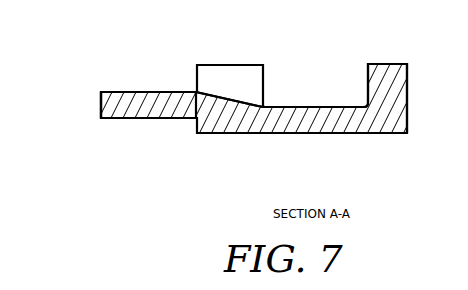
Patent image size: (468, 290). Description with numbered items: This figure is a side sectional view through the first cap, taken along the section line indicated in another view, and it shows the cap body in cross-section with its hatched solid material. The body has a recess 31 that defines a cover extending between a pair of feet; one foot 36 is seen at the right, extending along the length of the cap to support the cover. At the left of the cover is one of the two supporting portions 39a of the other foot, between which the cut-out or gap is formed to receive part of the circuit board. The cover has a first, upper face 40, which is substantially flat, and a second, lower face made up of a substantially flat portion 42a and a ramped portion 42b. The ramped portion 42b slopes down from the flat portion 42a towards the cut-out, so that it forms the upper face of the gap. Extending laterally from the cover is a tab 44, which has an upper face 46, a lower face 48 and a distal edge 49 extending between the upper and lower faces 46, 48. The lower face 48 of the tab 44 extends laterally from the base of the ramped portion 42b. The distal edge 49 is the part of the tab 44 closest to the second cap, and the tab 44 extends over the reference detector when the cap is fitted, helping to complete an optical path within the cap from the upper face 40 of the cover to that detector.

The recess 31 is at (327, 93).
The foot 36 is at (396, 78).
The supporting portion 39a is at (223, 77).
The upper face 40 is at (301, 134).
The flat portion 42a is at (339, 106).
The ramped portion 42b is at (224, 100).
The tab 44 is at (143, 102).
The upper face 46 is at (151, 119).
The lower face 48 is at (157, 92).
The distal edge 49 is at (101, 101).